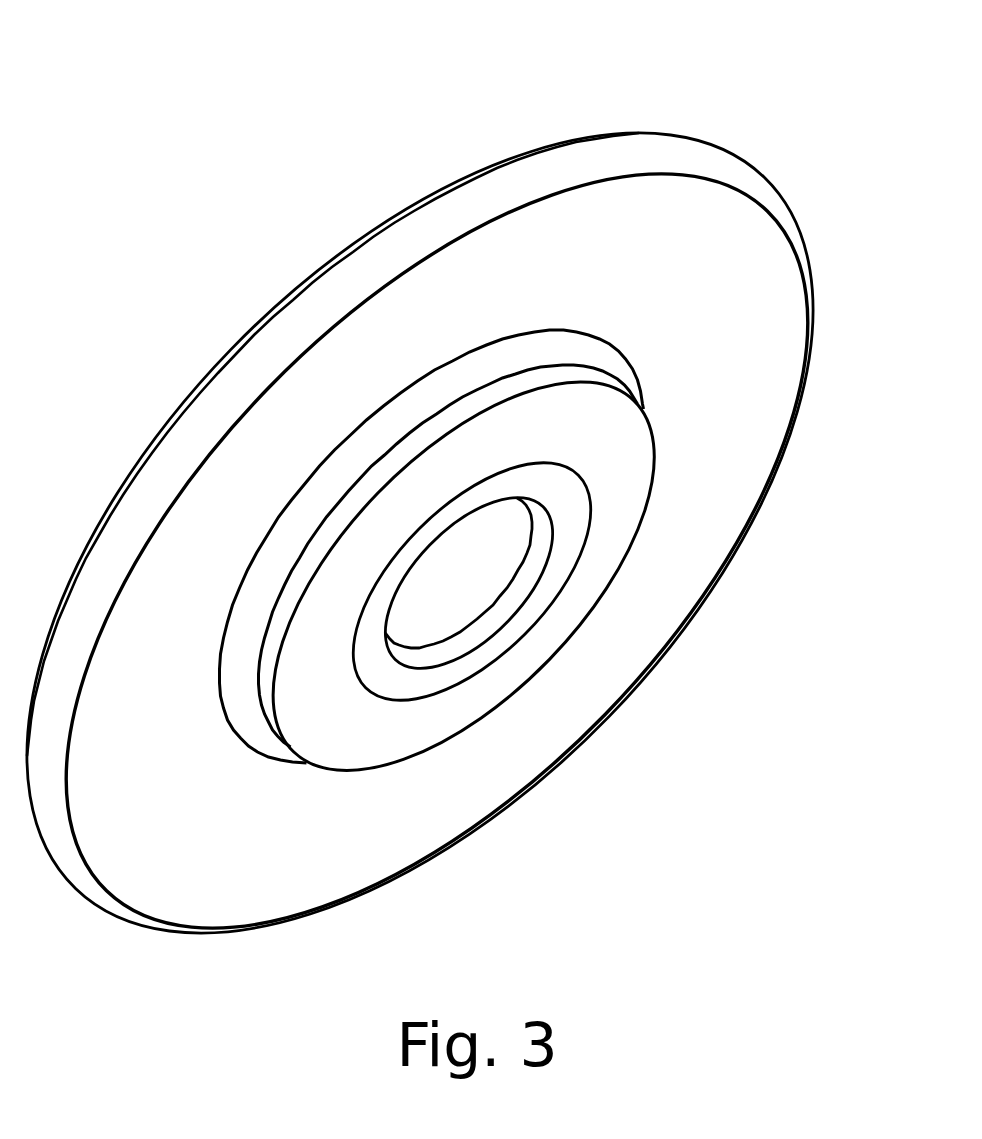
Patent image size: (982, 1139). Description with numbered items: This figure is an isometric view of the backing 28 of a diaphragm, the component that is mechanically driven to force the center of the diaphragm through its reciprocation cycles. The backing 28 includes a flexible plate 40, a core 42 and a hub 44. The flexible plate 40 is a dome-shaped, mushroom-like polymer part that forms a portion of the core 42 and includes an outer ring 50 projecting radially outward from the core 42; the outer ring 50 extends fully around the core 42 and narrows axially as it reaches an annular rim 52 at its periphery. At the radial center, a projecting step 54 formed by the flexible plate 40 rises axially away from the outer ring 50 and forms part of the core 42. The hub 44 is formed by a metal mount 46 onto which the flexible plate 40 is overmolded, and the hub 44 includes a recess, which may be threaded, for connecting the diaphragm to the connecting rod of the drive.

The backing 28 is at (477, 536).
The flexible plate 40 is at (643, 135).
The core 42 is at (512, 712).
The hub 44 is at (513, 605).
The mount 46 is at (565, 552).
The outer ring 50 is at (748, 433).
The annular rim 52 is at (489, 192).
The projecting step 54 is at (402, 737).